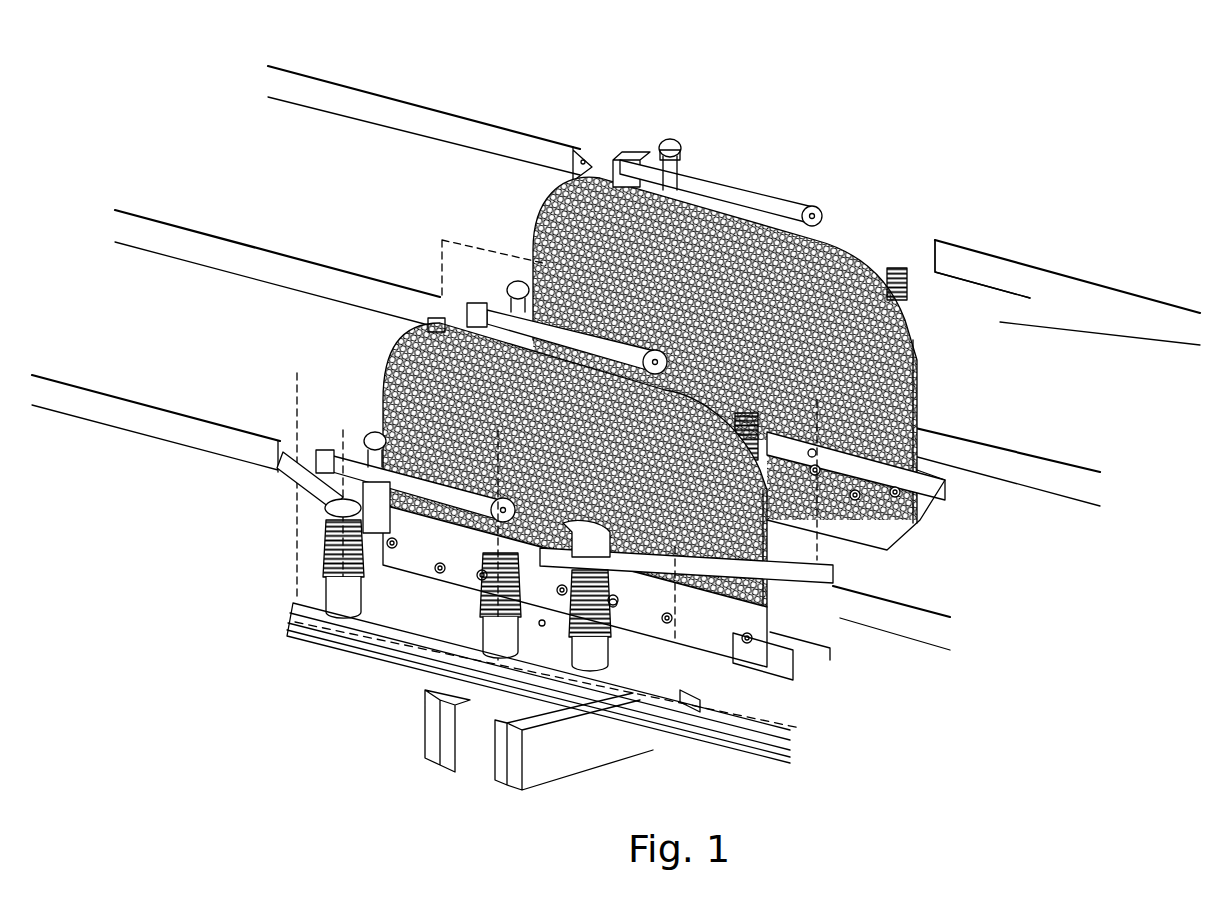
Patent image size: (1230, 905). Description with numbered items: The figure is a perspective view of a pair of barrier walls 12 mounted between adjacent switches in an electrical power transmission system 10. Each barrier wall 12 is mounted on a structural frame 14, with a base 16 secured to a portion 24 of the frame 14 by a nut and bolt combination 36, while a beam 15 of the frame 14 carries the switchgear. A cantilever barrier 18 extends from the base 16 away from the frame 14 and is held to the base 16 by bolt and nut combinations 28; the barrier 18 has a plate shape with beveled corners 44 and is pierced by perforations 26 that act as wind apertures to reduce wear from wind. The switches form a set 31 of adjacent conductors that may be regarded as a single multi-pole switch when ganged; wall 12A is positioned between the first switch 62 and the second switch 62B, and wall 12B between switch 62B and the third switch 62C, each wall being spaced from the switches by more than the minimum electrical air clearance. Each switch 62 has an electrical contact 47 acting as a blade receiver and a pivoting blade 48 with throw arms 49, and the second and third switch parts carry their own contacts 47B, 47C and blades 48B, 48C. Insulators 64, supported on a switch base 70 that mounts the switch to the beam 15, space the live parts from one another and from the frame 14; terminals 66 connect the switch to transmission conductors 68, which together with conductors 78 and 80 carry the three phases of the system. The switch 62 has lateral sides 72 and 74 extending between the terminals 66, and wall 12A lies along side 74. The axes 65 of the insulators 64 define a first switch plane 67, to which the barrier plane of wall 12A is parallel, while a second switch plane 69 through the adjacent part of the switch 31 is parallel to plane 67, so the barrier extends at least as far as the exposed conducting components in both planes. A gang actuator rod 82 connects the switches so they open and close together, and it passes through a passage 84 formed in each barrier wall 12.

The electrical power transmission system 10 is at (918, 120).
The set of adjacent conductors 31 is at (1015, 125).
The barrier wall 12 is at (712, 376).
The barrier wall 12A is at (832, 560).
The barrier wall 12B is at (823, 240).
The structural frame 14 is at (574, 759).
The portion of frame 24 is at (538, 763).
The beam 15 is at (452, 747).
The base 16 is at (737, 678).
The cantilever barrier 18 is at (820, 487).
The perforations 26 is at (697, 213).
The bolt and nut combinations 28 is at (740, 668).
The nut and bolt combination 36 is at (541, 628).
The beveled corners 44 is at (557, 200).
The electrical contact 47 is at (375, 440).
The bolt 47B is at (510, 290).
The bolt 47C is at (670, 147).
The blade 48 is at (380, 417).
The throw arms 49 is at (432, 452).
The clamp bar 48B is at (545, 345).
The clamp bar 48C is at (693, 180).
The switch 62 is at (370, 407).
The switch 62B is at (501, 298).
The switch 62C is at (783, 192).
The insulators 64 is at (330, 548).
The axes 65 is at (343, 595).
The terminals 66 is at (290, 475).
The first switch plane 67 is at (855, 600).
The transmission conductors 68 is at (60, 376).
The second switch plane 69 is at (470, 255).
The switch base 70 is at (688, 693).
The lateral side 72 is at (405, 612).
The lateral side 74 is at (430, 325).
The conductor 78 is at (140, 212).
The conductor 80 is at (288, 66).
The gang actuator rod 82 is at (613, 605).
The passage 84 is at (780, 420).